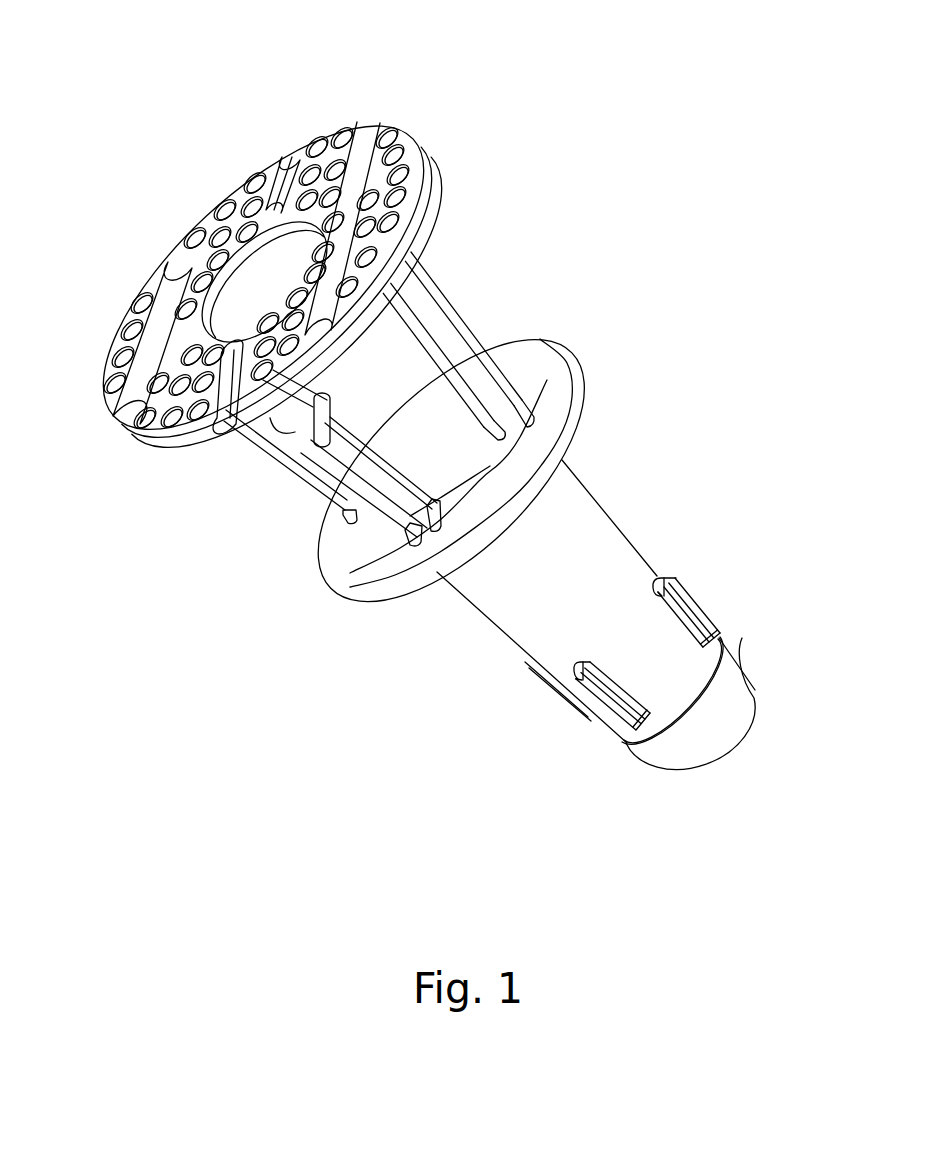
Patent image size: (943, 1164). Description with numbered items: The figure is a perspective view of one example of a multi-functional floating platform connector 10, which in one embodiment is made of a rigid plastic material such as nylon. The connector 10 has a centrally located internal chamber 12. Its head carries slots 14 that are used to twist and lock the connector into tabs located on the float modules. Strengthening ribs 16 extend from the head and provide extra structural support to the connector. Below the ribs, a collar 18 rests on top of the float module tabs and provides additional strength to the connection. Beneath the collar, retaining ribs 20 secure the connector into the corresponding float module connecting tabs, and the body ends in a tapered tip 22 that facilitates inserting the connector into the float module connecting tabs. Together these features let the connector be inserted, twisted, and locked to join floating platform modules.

The multi-functional floating platform connector 10 is at (183, 110).
The internal chamber 12 is at (270, 267).
The slots 14 is at (232, 390).
The strengthening ribs 16 is at (463, 323).
The collar 18 is at (540, 442).
The retaining ribs 20 is at (585, 688).
The tapered tip 22 is at (742, 638).